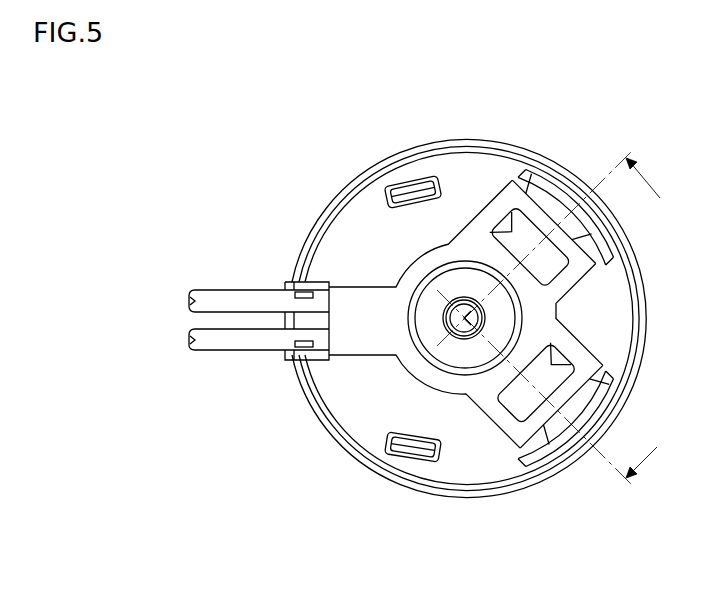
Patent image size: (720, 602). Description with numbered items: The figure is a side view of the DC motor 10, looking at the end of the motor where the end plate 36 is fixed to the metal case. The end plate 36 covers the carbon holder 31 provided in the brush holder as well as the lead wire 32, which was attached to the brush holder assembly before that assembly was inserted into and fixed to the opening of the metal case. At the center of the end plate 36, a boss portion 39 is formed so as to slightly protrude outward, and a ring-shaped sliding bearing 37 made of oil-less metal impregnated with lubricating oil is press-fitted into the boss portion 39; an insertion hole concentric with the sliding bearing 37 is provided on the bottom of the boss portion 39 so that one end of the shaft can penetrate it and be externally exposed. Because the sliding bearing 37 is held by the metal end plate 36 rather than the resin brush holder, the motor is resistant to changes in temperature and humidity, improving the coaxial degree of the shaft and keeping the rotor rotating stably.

The DC motor 10 is at (455, 508).
The carbon holder 31 is at (553, 300).
The lead wire 32 is at (242, 350).
The end plate 36 is at (374, 293).
The sliding bearing 37 is at (497, 320).
The boss portion 39 is at (408, 338).